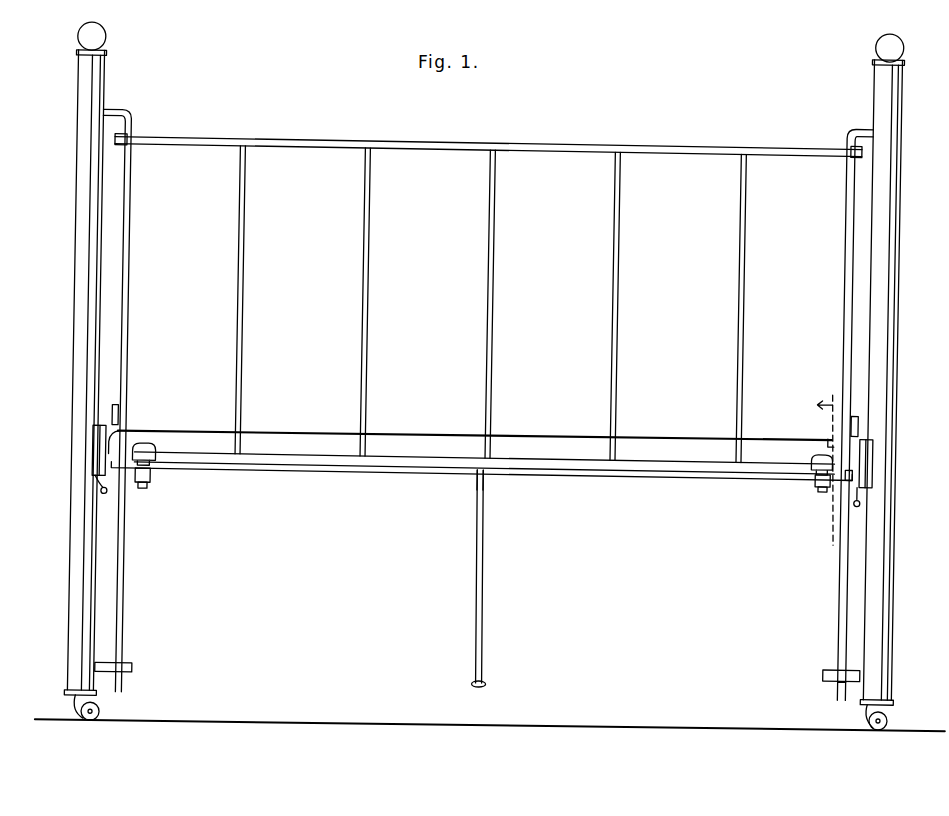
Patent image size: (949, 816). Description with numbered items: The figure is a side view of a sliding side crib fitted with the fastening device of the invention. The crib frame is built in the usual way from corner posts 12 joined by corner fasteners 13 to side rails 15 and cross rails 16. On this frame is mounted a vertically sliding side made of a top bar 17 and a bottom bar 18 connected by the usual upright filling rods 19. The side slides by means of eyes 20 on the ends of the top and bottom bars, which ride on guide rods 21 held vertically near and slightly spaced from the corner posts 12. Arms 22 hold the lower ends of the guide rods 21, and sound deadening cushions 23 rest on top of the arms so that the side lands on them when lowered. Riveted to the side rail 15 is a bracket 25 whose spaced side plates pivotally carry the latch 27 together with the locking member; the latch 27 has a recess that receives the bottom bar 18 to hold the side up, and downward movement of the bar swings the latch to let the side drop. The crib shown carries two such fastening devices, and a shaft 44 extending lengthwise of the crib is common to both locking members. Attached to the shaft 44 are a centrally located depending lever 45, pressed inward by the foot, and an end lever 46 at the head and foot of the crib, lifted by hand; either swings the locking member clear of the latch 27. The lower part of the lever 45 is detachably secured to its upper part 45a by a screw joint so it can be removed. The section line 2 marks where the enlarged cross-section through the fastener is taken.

The section line 2 is at (824, 468).
The corner post 12 is at (73, 190).
The corner fastener 13 is at (93, 454).
The side rail 15 is at (471, 447).
The cross rail 16 is at (117, 414).
The top bar 17 is at (400, 151).
The bottom bar 18 is at (313, 475).
The upright filling rod 19 is at (241, 300).
The eye 20 is at (133, 142).
The guide rod 21 is at (126, 306).
The arm 22 is at (847, 677).
The sound deadening cushion 23 is at (827, 668).
The bracket 25 is at (153, 484).
The latch 27 is at (148, 446).
The shaft 44 is at (456, 471).
The depending lever 45 is at (486, 553).
The upper part of lever 45a is at (485, 490).
The end lever 46 is at (99, 497).